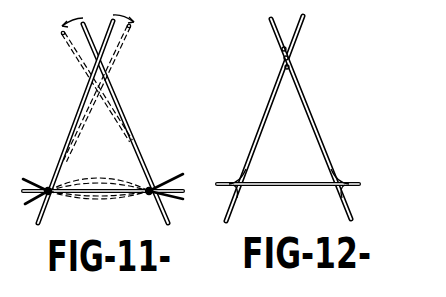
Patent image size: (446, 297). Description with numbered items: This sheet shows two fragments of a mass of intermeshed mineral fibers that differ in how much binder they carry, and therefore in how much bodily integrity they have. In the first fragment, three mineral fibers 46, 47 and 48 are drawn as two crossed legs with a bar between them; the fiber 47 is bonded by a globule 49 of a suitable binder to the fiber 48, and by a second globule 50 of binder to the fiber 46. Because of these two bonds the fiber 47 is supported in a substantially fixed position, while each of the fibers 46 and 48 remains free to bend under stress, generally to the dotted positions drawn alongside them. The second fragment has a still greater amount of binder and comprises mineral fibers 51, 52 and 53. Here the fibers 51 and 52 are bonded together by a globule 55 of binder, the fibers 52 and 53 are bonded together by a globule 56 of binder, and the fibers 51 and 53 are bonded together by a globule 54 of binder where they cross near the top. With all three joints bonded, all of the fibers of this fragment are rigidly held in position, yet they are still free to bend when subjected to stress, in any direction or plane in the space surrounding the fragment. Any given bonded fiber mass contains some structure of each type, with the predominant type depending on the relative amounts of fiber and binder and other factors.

In FIG. 11, the mineral fiber 46 is at (110, 87).
In FIG. 11, the mineral fiber 47 is at (103, 193).
In FIG. 11, the mineral fiber 48 is at (69, 138).
In FIG. 11, the globule of binder 49 is at (50, 193).
In FIG. 11, the globule of binder 50 is at (160, 183).
In FIG. 12, the mineral fiber 51 is at (305, 100).
In FIG. 12, the mineral fiber 52 is at (305, 168).
In FIG. 12, the mineral fiber 53 is at (261, 125).
In FIG. 12, the globule of binder 54 is at (290, 57).
In FIG. 12, the globule of binder 55 is at (343, 177).
In FIG. 12, the globule of binder 56 is at (238, 188).